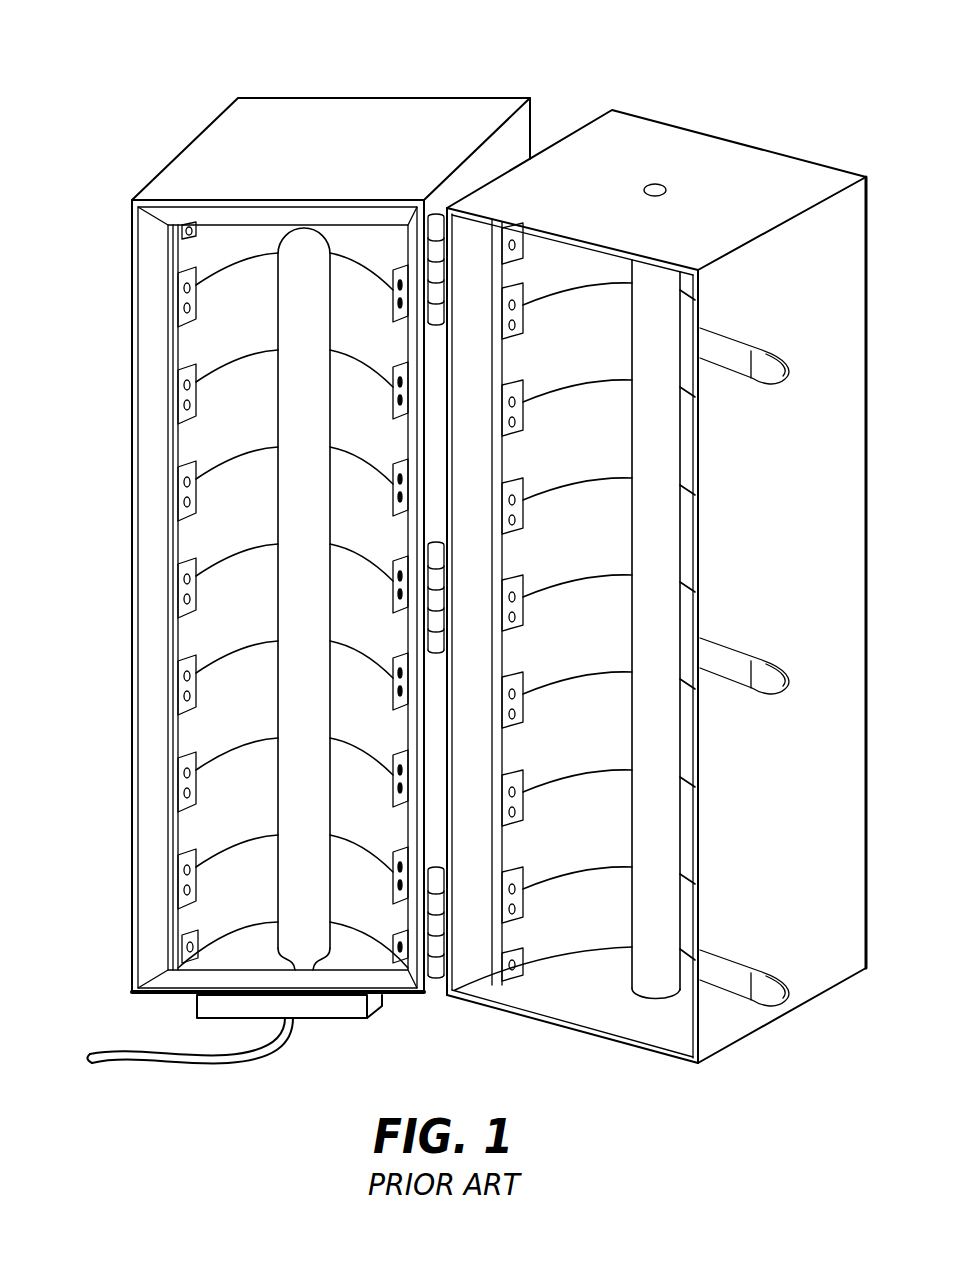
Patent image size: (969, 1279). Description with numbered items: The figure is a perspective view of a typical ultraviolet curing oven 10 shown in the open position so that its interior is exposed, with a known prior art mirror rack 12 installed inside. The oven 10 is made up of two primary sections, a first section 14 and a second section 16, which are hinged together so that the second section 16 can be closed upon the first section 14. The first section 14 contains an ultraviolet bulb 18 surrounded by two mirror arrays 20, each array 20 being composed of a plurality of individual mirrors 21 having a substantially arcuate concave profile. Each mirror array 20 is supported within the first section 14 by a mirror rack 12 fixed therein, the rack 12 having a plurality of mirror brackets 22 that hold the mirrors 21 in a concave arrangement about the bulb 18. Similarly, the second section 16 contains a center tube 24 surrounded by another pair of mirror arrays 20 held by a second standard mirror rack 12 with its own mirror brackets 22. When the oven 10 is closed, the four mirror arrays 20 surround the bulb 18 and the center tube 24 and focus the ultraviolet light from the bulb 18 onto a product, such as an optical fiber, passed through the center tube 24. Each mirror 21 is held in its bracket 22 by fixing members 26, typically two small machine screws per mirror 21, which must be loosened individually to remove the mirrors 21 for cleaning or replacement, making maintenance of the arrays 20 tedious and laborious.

The ultraviolet curing oven 10 is at (228, 58).
The mirror rack 12 is at (219, 990).
The first section 14 is at (188, 170).
The second section 16 is at (780, 175).
The ultraviolet bulb 18 is at (302, 612).
The mirror array 20 is at (257, 956).
The mirror 21 is at (220, 330).
The mirror bracket 22 is at (183, 300).
The center tube 24 is at (662, 437).
The fixing member 26 is at (185, 481).